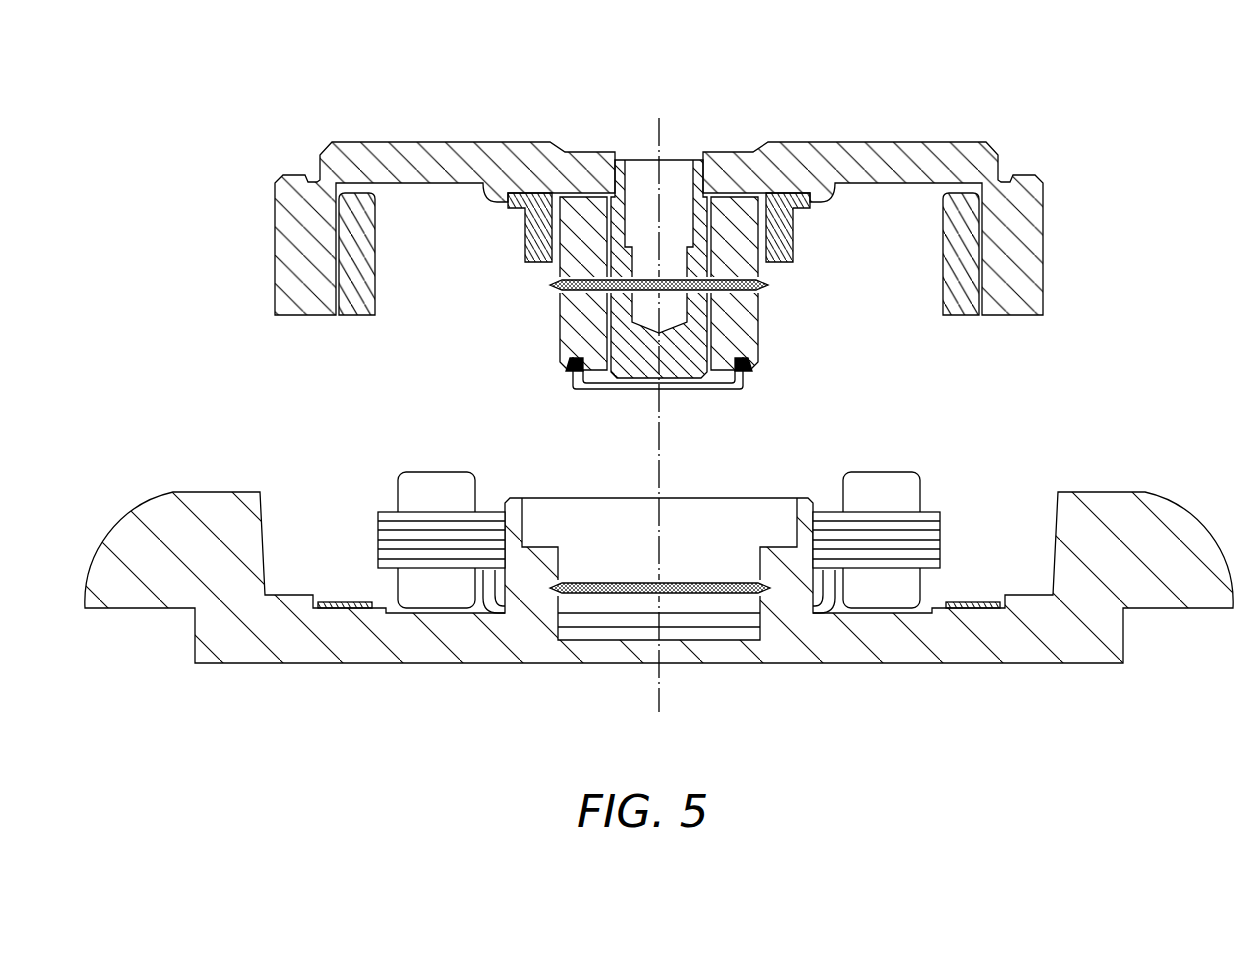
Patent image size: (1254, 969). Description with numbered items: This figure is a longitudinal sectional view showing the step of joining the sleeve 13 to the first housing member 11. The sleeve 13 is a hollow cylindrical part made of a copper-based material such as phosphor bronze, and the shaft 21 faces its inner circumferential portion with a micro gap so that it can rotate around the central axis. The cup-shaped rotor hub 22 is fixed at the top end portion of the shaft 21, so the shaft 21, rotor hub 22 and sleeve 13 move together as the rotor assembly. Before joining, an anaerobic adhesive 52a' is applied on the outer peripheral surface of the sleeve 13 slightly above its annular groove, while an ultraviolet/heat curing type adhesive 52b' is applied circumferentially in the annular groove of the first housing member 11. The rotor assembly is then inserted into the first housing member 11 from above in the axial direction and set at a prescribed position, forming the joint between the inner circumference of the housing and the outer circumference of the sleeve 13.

The first housing member 11 is at (413, 635).
The sleeve 13 is at (760, 337).
The shaft 21 is at (700, 140).
The rotor hub 22 is at (495, 140).
The anaerobic adhesive 52a' is at (601, 313).
The ultraviolet/heat curing type adhesive 52b' is at (669, 665).